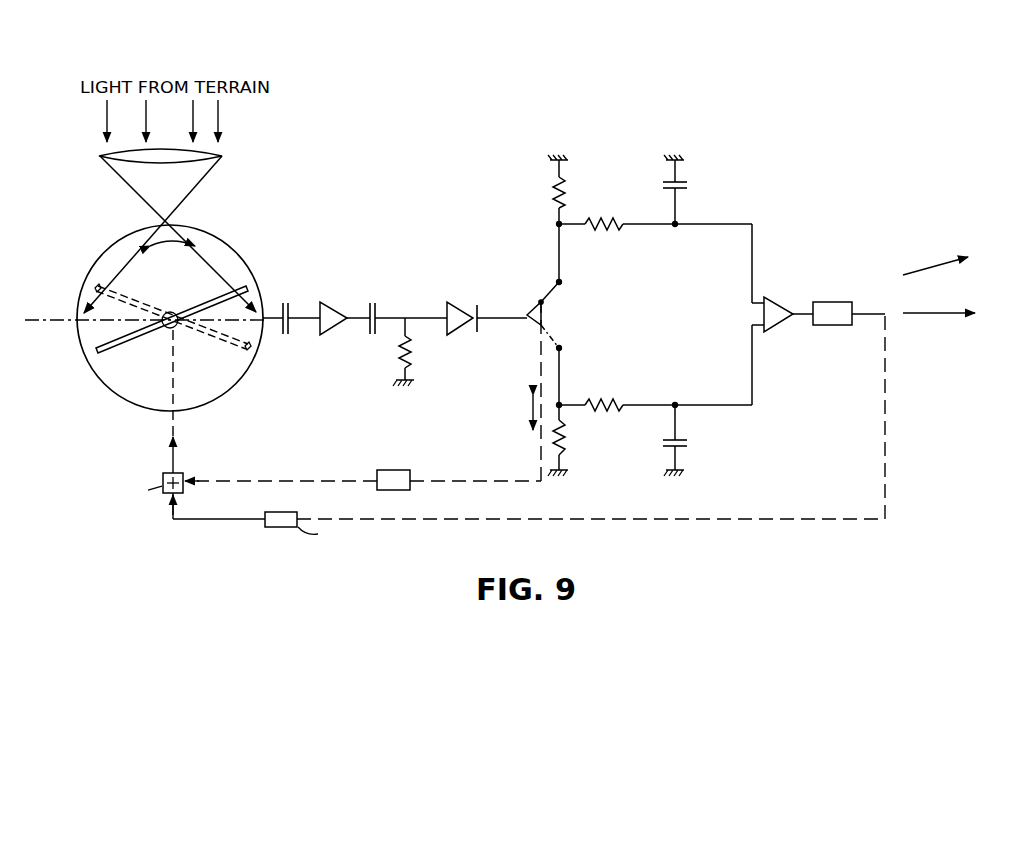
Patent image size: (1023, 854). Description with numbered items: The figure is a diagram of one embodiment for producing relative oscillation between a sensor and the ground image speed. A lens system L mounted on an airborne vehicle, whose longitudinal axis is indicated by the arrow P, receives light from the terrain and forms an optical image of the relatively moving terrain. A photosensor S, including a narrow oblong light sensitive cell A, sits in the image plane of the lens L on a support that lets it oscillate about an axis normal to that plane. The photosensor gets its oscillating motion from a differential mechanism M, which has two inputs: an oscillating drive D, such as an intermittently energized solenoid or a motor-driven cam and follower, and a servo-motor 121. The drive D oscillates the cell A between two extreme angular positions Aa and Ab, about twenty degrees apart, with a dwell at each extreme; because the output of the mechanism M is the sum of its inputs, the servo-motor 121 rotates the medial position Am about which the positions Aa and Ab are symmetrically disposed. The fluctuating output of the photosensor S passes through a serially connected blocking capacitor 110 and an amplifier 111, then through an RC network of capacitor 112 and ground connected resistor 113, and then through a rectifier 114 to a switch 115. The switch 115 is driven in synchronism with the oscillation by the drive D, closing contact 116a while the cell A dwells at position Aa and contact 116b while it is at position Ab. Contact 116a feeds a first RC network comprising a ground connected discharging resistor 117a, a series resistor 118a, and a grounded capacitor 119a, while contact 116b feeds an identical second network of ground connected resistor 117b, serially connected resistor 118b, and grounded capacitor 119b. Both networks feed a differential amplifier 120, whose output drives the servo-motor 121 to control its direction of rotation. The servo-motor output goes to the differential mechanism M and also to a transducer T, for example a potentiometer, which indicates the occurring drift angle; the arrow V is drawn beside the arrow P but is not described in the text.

The lens system L is at (223, 152).
The light sensitive cell A is at (193, 311).
The first extreme angular position Aa is at (231, 296).
The second extreme angular position Ab is at (223, 344).
The medial position Am is at (58, 316).
The photosensor S is at (219, 394).
The differential mechanism M is at (165, 496).
The oscillating drive D is at (406, 470).
The transducer T is at (271, 528).
The blocking capacitor 110 is at (283, 338).
The amplifier 111 is at (337, 336).
The capacitor 112 is at (377, 338).
The ground connected resistor 113 is at (398, 356).
The rectifier 114 is at (468, 335).
The switch 115 is at (543, 300).
The contact 116a is at (562, 282).
The contact 116b is at (561, 348).
The discharging resistor 117a is at (556, 191).
The ground connected resistor 117b is at (563, 453).
The resistor 118a is at (606, 219).
The serially connected resistor 118b is at (597, 411).
The grounded capacitor 119a is at (690, 183).
The ground connected capacitor 119b is at (690, 441).
The differential amplifier 120 is at (781, 327).
The servo-motor 121 is at (834, 326).
The velocity output V is at (945, 257).
The longitudinal axis P is at (948, 313).